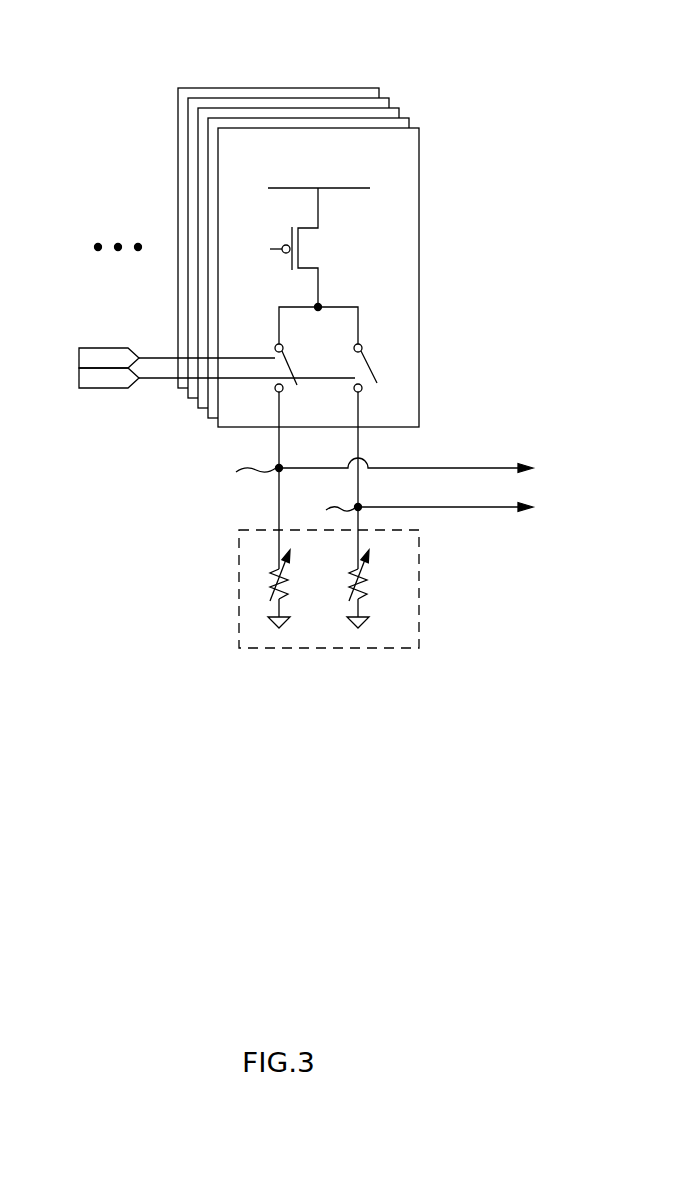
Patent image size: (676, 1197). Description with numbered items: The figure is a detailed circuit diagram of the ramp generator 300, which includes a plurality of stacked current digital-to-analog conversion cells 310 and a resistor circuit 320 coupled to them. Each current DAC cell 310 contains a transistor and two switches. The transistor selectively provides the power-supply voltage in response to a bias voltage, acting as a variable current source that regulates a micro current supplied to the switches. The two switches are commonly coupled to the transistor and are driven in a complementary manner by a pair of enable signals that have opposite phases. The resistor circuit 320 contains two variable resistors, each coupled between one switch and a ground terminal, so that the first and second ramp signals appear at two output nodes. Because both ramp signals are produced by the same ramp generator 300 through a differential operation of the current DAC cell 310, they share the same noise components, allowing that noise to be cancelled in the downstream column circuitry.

The ramp generator 300 is at (97, 40).
The current digital-to-analog conversion (DAC) cell 310 is at (419, 277).
The resistor circuit 320 is at (419, 597).